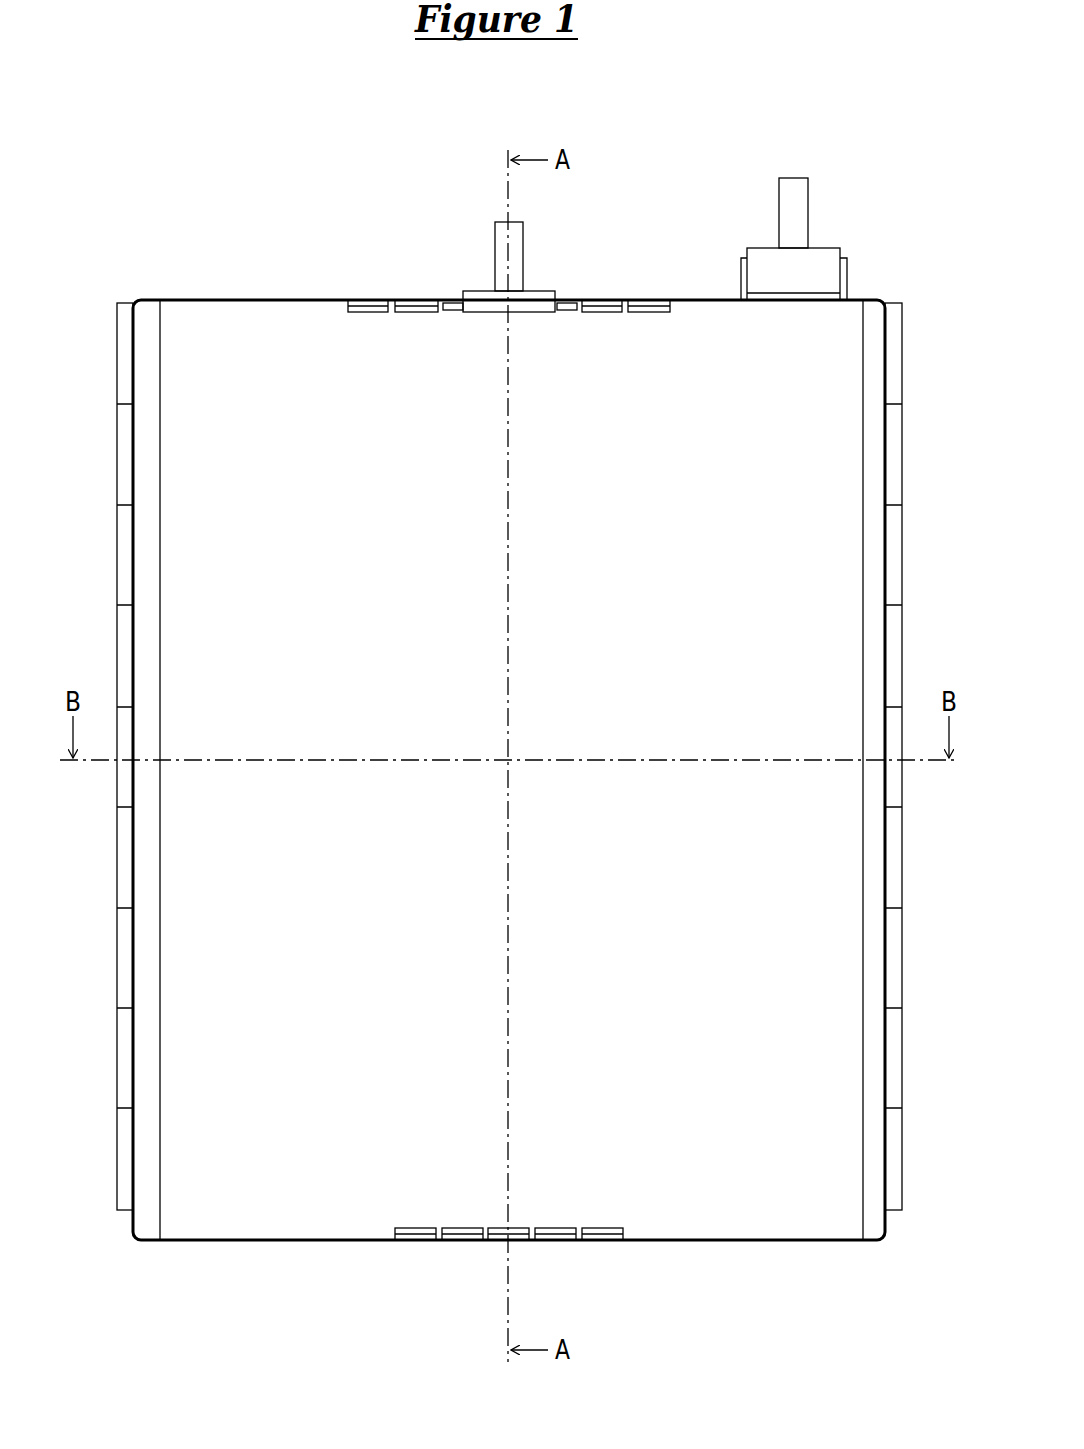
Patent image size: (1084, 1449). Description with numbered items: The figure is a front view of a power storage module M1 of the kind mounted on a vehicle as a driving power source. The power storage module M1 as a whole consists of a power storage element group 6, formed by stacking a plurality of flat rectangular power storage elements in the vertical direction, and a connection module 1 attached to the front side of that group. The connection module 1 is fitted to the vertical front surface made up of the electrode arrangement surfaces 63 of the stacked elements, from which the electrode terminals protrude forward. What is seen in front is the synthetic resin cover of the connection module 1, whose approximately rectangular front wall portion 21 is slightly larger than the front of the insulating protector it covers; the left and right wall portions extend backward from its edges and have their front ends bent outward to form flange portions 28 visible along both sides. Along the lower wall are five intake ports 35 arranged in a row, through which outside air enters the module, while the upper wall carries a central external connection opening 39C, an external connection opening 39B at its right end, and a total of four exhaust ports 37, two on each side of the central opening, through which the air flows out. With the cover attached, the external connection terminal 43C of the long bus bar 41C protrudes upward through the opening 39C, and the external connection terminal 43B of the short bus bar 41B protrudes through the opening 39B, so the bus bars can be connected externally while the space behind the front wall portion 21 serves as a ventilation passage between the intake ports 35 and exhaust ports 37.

The connection module 1 is at (680, 150).
The power storage module M1 is at (226, 200).
The power storage element group 6 is at (130, 296).
The front wall portion 21 is at (273, 1137).
The flange portions 28 is at (145, 1044).
The electrode arrangement surface 63 is at (125, 365).
The intake ports 35 is at (600, 1240).
The exhaust ports 37 is at (415, 300).
The external connection opening 39B is at (762, 298).
The external connection opening 39C is at (569, 303).
The short bus bar 41B is at (810, 268).
The long bus bar 41C is at (478, 300).
The external connection terminal 43B is at (793, 193).
The external connection terminal 43C is at (502, 234).